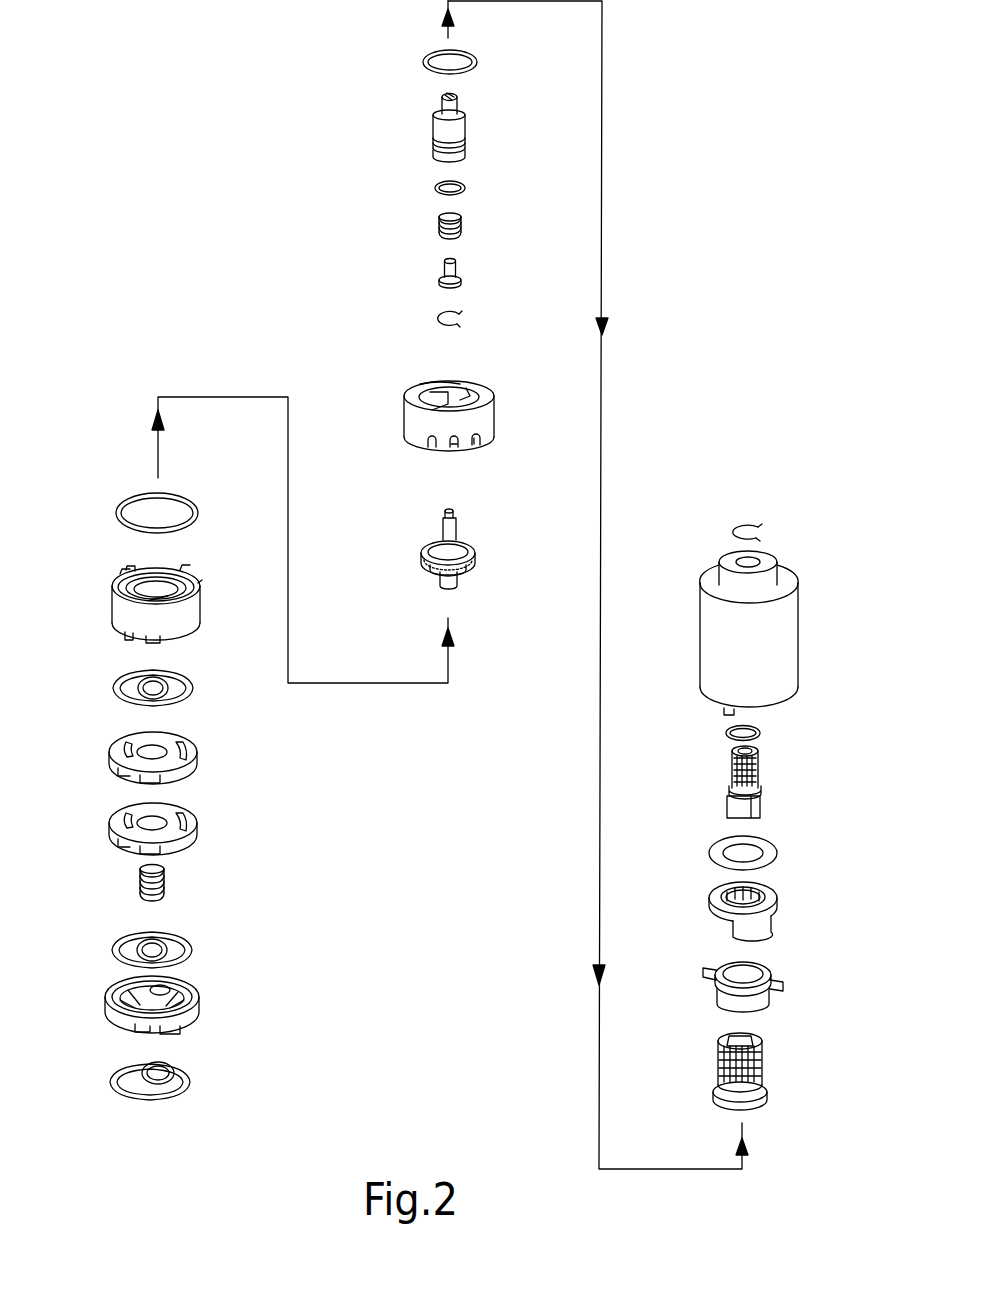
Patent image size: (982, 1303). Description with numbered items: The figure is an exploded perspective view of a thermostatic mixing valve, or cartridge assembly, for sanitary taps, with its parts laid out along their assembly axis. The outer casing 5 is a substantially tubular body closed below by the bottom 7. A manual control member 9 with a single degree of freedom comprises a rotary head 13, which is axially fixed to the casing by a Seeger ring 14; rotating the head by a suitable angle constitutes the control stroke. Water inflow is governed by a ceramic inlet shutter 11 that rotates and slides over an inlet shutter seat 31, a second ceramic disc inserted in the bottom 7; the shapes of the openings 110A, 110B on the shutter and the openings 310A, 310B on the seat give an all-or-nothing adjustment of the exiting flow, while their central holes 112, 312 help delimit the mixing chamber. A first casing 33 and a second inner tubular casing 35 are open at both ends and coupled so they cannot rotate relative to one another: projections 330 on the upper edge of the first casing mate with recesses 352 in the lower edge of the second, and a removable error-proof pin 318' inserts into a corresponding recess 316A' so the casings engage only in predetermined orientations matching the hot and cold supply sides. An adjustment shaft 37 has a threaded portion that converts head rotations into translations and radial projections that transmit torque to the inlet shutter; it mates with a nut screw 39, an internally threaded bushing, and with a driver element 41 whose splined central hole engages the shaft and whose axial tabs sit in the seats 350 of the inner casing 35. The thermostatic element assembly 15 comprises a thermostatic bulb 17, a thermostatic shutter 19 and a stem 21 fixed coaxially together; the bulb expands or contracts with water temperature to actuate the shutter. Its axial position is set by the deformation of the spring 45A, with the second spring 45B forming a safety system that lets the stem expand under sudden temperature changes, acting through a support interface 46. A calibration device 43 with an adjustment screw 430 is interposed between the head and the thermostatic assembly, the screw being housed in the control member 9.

The outer casing 5 is at (785, 634).
The bottom 7 is at (105, 1015).
The manual control member 9 is at (781, 782).
The inlet shutter 11 is at (167, 733).
The rotary head 13 is at (760, 768).
The Seeger ring 14 is at (765, 531).
The thermostatic element assembly 15 is at (474, 541).
The thermostatic bulb 17 is at (456, 577).
The thermostatic shutter 19 is at (478, 548).
The stem 21 is at (445, 541).
The inlet shutter seat 31 is at (162, 844).
The first casing 33 is at (162, 583).
The second inner tubular casing 35 is at (455, 412).
The adjustment shaft 37 is at (765, 1062).
The nut screw 39 is at (800, 977).
The driver element 41 is at (790, 912).
The calibration device 43 is at (454, 121).
The support interface 46 is at (440, 275).
The spring 45A is at (170, 884).
The second spring 45B is at (438, 228).
The opening 110A is at (128, 738).
The opening 110B is at (186, 750).
The central hole 112 is at (160, 752).
The opening 310A is at (132, 815).
The opening 310B is at (185, 808).
The central hole 312 is at (150, 828).
The recess 316A' is at (461, 471).
The error-proof pin 318' is at (207, 561).
The projection 330 is at (130, 570).
The seat 350 is at (427, 381).
The recess 352 is at (480, 445).
The adjustment screw 430 is at (455, 104).